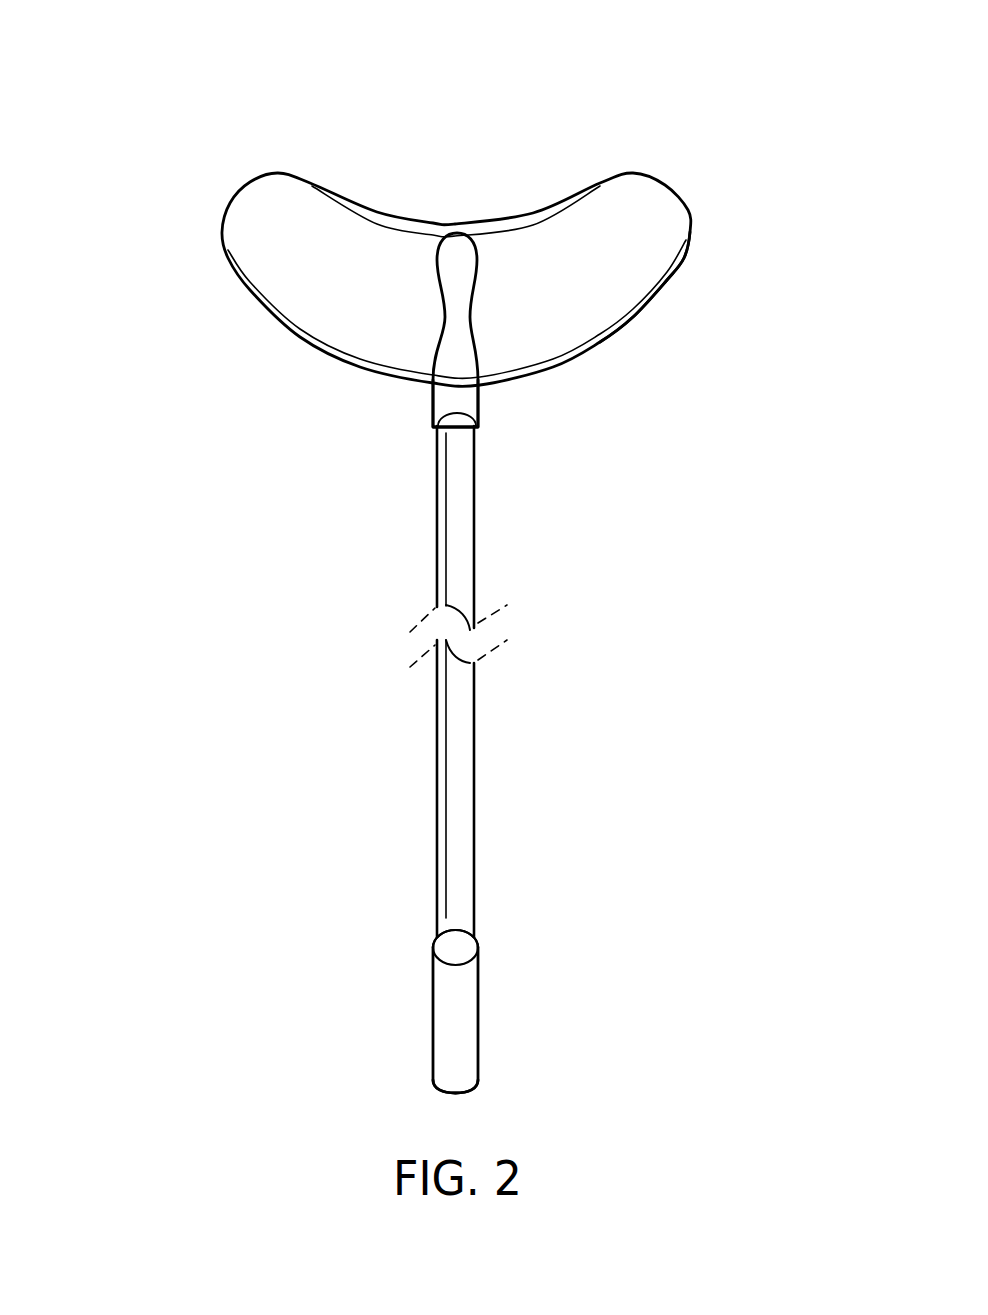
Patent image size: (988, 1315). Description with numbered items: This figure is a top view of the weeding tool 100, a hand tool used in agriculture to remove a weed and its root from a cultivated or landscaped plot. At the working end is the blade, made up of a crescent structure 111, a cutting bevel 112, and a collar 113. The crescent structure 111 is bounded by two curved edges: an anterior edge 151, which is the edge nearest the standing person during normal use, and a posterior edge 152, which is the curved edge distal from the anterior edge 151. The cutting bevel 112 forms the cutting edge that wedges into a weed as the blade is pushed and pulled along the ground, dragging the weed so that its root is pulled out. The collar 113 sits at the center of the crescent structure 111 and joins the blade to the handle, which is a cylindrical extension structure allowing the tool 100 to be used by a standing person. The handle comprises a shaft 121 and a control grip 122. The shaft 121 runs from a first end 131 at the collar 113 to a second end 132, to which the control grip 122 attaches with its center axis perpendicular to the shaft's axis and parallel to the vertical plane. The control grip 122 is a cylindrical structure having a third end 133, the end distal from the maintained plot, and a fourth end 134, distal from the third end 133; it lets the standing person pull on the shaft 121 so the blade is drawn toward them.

The weeding tool 100 is at (153, 105).
The crescent structure 111 is at (652, 220).
The cutting bevel 112 is at (637, 317).
The collar 113 is at (457, 263).
The shaft 121 is at (477, 568).
The control grip 122 is at (463, 1020).
The first end 131 is at (462, 420).
The second end 132 is at (440, 945).
The third end 133 is at (444, 947).
The fourth end 134 is at (462, 1097).
The anterior edge 151 is at (377, 207).
The posterior edge 152 is at (352, 358).